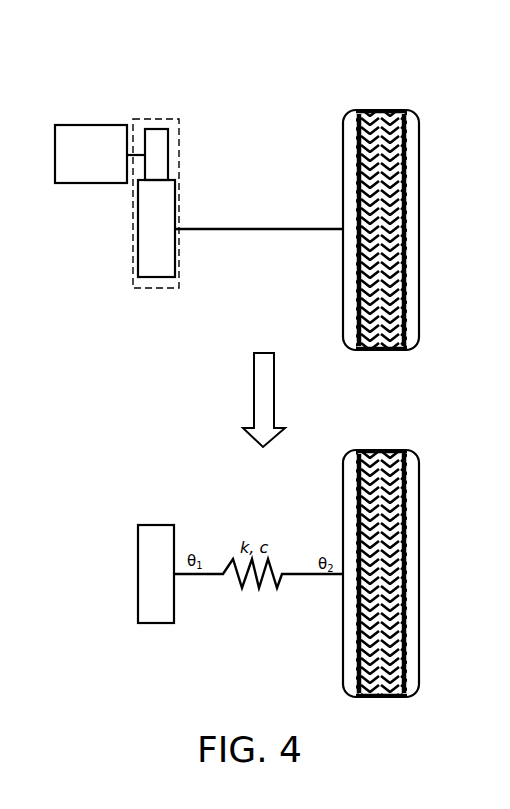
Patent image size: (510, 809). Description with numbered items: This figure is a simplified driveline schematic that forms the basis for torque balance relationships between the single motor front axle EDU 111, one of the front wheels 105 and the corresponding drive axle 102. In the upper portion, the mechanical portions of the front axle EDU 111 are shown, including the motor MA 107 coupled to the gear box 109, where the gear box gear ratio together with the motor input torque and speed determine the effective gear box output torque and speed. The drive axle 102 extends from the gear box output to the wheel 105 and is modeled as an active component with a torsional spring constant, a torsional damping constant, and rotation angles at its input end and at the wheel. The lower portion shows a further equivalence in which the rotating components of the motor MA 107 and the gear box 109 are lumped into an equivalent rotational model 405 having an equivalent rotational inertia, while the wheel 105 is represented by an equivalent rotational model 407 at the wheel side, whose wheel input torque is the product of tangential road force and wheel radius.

The drive axle 102 is at (245, 189).
The front wheel 105 is at (360, 110).
The motor MA 107 is at (93, 125).
The gear box 109 is at (180, 140).
The single motor front axle EDU 111 is at (246, 97).
The equivalent rotational model 405 is at (127, 521).
The equivalent rotational model at the wheel side 407 is at (435, 491).